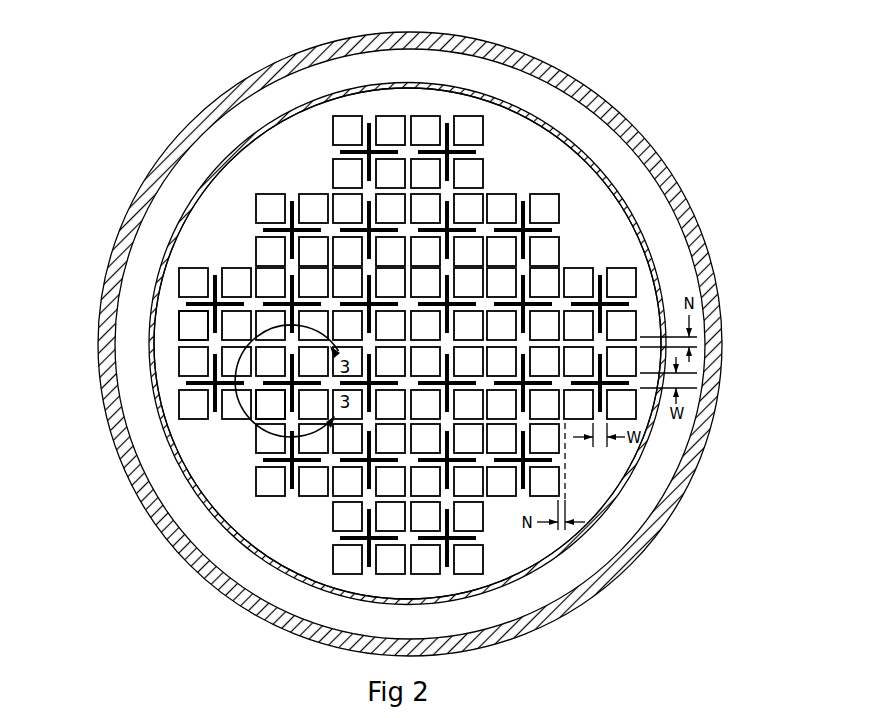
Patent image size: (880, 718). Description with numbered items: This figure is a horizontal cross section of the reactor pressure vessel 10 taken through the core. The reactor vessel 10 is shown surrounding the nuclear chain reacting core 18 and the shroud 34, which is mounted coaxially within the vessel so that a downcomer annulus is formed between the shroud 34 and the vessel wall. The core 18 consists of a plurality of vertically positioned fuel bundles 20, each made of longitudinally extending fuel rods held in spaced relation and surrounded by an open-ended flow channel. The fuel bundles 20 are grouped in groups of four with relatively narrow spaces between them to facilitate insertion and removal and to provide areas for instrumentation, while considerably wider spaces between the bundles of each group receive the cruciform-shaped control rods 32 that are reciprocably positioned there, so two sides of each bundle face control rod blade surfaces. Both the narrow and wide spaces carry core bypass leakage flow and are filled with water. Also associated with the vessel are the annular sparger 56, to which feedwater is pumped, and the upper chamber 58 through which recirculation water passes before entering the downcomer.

The reactor pressure vessel 10 is at (123, 220).
The nuclear chain reacting core 18 is at (505, 168).
The fuel bundles 20 is at (625, 328).
The cruciform-shaped control rods 32 is at (368, 118).
The shroud 34 is at (577, 143).
The annular sparger 56 is at (182, 343).
The upper chamber 58 is at (125, 568).